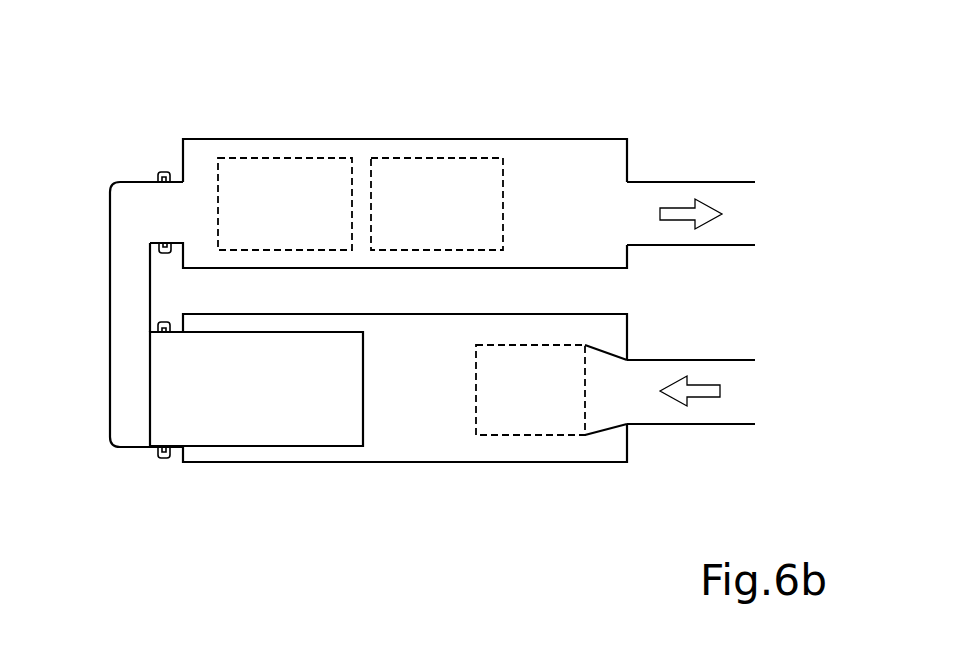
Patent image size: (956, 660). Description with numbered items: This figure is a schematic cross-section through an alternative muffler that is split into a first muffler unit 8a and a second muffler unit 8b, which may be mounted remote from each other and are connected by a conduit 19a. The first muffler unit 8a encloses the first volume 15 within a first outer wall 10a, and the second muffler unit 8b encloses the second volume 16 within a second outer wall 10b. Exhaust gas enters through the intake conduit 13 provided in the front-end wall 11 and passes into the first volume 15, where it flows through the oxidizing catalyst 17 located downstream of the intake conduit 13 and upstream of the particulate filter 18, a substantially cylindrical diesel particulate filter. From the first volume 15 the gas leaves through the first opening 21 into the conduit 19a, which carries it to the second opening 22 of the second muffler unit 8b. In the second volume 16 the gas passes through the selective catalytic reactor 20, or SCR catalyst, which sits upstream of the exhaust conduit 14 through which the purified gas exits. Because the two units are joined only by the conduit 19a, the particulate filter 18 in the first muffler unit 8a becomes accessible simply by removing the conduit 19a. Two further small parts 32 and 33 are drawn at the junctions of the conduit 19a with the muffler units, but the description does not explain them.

The first muffler unit 8a is at (505, 466).
The second muffler unit 8b is at (387, 128).
The first outer wall 10a is at (398, 463).
The second outer wall 10b is at (509, 139).
The front-end wall 11 is at (628, 158).
The intake conduit 13 is at (748, 392).
The exhaust conduit 14 is at (748, 214).
The first volume 15 is at (404, 402).
The second volume 16 is at (548, 226).
The oxidizing catalyst 17 is at (521, 414).
The particulate filter 18 is at (244, 403).
The conduit 19a is at (110, 287).
The selective catalytic reactor 20 is at (421, 222).
The first opening 21 is at (182, 433).
The second opening 22 is at (222, 183).
The lower fastening clip 32 is at (162, 460).
The upper fastening clip 33 is at (164, 172).